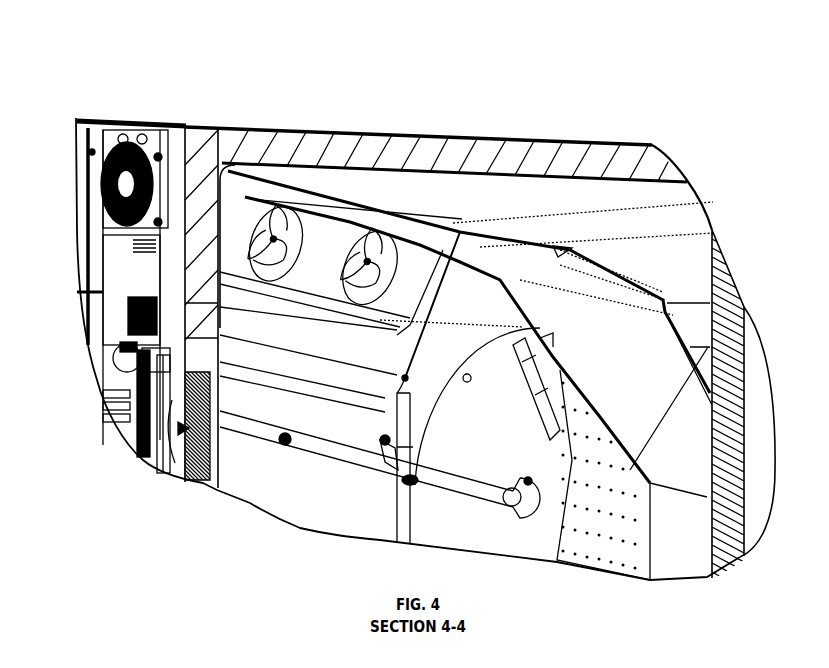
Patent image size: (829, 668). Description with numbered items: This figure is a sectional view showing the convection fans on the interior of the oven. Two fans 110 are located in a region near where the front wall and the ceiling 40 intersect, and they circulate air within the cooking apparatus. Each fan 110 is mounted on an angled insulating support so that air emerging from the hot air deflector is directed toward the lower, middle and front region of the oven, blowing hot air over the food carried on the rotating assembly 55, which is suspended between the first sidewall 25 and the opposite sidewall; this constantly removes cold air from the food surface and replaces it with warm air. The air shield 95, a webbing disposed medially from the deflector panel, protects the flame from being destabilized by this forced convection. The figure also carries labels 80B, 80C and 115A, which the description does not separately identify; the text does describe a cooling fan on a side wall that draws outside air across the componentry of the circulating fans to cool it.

The first sidewall 25 is at (478, 308).
The ceiling 40 is at (376, 122).
The rotating assembly 55 is at (526, 345).
The second conduit 80B is at (363, 213).
The third conduit 80C is at (617, 353).
The air shield 95 is at (740, 295).
The fan 110 is at (362, 261).
The electronics module 115A is at (74, 223).